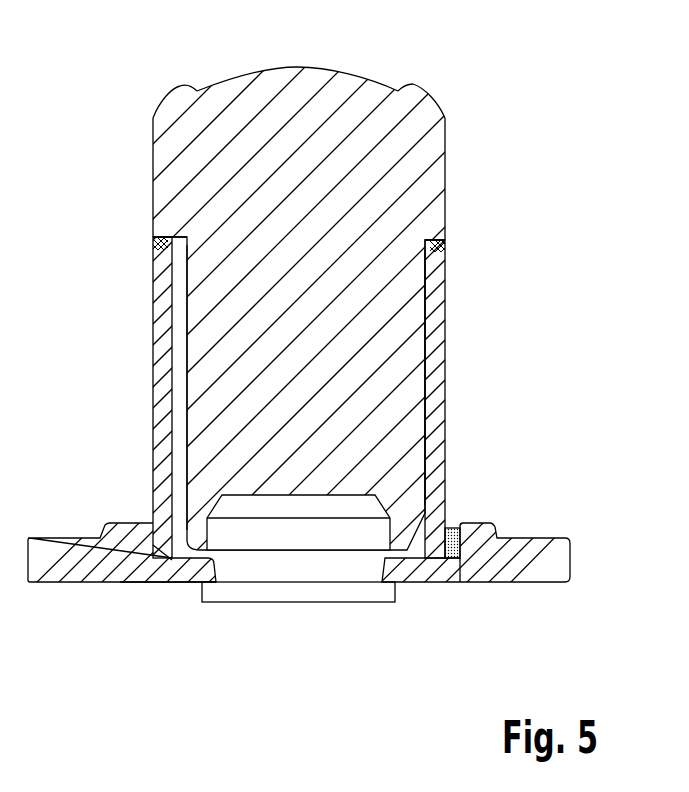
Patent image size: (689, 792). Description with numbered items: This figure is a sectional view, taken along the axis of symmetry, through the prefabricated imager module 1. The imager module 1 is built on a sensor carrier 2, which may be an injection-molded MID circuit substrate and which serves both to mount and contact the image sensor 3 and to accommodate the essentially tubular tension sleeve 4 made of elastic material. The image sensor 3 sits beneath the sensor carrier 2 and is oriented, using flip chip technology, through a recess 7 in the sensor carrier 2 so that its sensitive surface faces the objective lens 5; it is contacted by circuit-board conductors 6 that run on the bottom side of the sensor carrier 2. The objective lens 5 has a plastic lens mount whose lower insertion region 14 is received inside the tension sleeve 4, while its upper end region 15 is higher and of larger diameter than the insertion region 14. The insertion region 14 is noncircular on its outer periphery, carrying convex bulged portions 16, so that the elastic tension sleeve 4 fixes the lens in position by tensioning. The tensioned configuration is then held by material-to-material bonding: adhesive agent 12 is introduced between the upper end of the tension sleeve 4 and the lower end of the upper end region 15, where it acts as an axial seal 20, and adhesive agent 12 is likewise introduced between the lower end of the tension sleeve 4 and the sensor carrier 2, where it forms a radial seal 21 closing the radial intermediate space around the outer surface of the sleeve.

The imager module 1 is at (470, 28).
The sensor carrier 2 is at (558, 565).
The image sensor 3 is at (290, 595).
The tension sleeve 4 is at (438, 318).
The objective lens 5 is at (430, 150).
The circuit-board conductors 6 is at (168, 585).
The recess 7 is at (260, 568).
The adhesive agent 12 is at (440, 235).
The insertion region 14 is at (218, 327).
The end region 15 is at (158, 172).
The convex bulged portions 16 is at (413, 390).
The axial seal 20 is at (156, 239).
The radial seal 21 is at (448, 525).